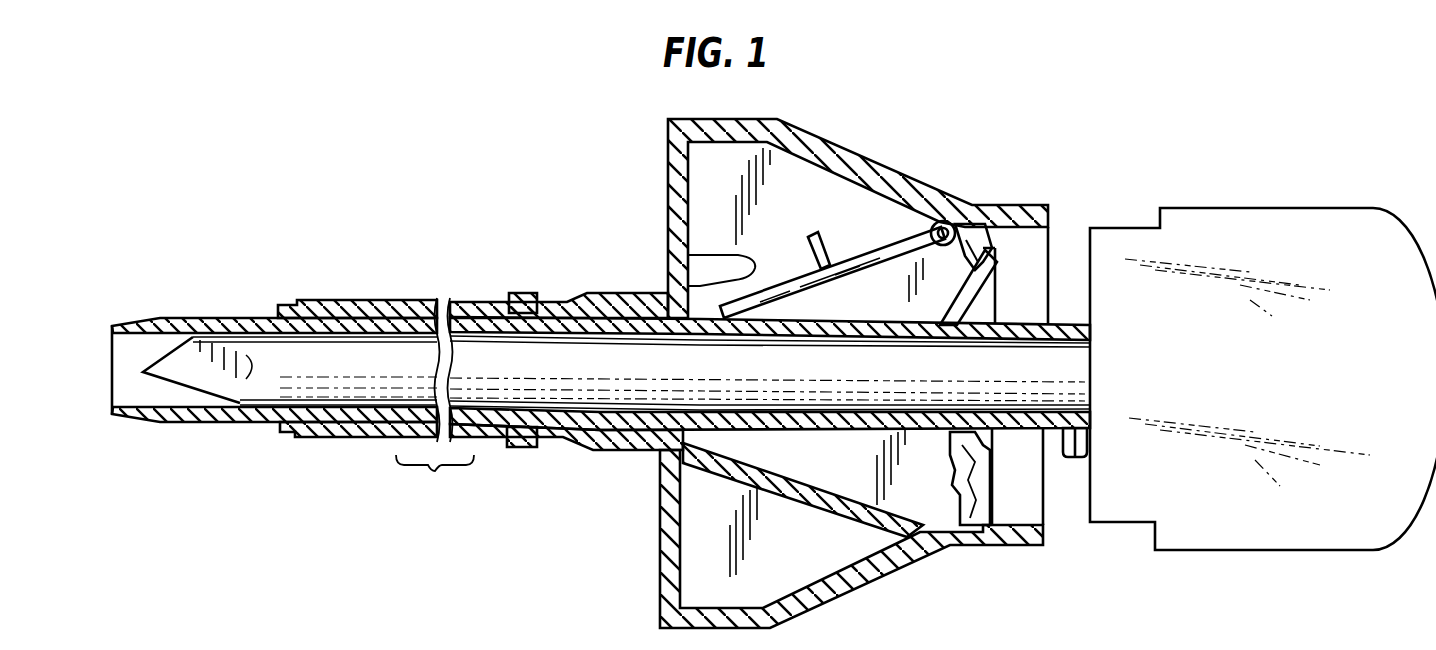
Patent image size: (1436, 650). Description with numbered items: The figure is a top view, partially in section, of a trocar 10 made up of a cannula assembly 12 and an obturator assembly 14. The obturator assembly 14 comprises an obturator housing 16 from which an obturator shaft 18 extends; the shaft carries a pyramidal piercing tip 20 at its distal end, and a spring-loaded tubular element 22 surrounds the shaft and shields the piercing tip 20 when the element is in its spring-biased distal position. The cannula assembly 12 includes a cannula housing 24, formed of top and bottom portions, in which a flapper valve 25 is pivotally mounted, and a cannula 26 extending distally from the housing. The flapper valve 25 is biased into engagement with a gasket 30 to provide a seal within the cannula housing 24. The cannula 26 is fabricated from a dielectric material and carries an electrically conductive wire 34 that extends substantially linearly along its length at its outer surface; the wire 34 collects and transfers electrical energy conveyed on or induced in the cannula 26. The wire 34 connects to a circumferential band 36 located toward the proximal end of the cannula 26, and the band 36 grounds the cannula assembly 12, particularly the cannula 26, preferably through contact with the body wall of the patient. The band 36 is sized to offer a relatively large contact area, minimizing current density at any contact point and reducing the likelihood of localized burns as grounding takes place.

The trocar 10 is at (867, 359).
The cannula assembly 12 is at (566, 366).
The obturator assembly 14 is at (1245, 422).
The obturator housing 16 is at (1050, 340).
The obturator shaft 18 is at (641, 418).
The pyramidal piercing tip 20 is at (197, 417).
The spring-loaded tubular element 22 is at (601, 347).
The cannula housing 24 is at (832, 373).
The flapper valve 25 is at (819, 369).
The cannula 26 is at (377, 488).
The gasket 30 is at (928, 374).
The electrically conductive wire 34 is at (357, 283).
The circumferential band 36 is at (522, 382).